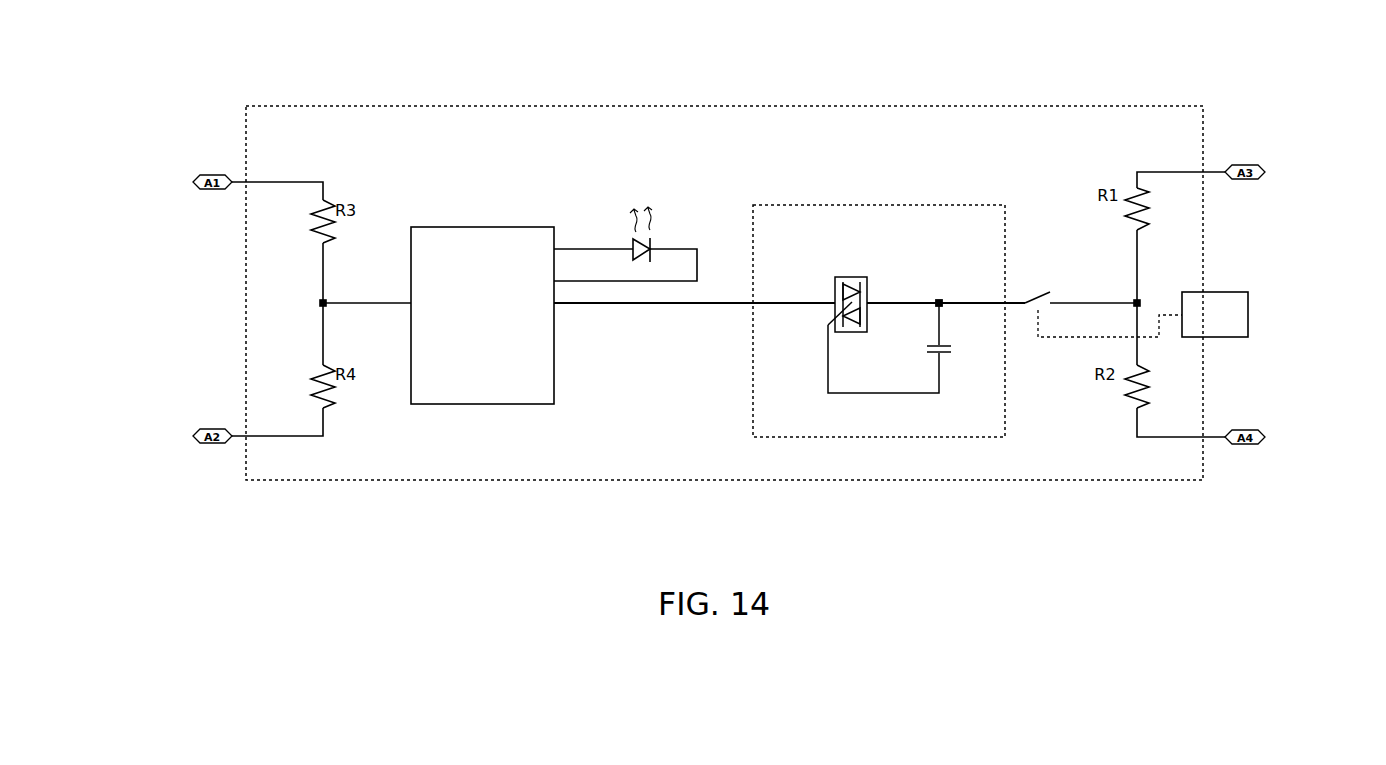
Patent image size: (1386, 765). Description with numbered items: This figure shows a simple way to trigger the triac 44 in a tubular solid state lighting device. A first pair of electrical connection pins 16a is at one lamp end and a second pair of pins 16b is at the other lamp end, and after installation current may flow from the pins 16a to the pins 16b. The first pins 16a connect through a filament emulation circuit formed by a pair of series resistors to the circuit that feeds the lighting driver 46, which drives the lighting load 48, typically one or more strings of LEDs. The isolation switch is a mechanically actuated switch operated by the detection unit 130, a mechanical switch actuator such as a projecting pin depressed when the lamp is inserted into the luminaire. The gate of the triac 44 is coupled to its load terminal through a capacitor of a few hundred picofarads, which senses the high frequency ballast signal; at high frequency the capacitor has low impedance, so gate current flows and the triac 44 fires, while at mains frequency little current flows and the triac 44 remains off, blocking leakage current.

The first pair of electrical connection pins 16a is at (212, 461).
The second pair of electrical connection pins 16b is at (1230, 450).
The triac 44 is at (855, 275).
The lighting driver 46 is at (497, 222).
The lighting load 48 is at (632, 244).
The detection unit 130 is at (1248, 316).